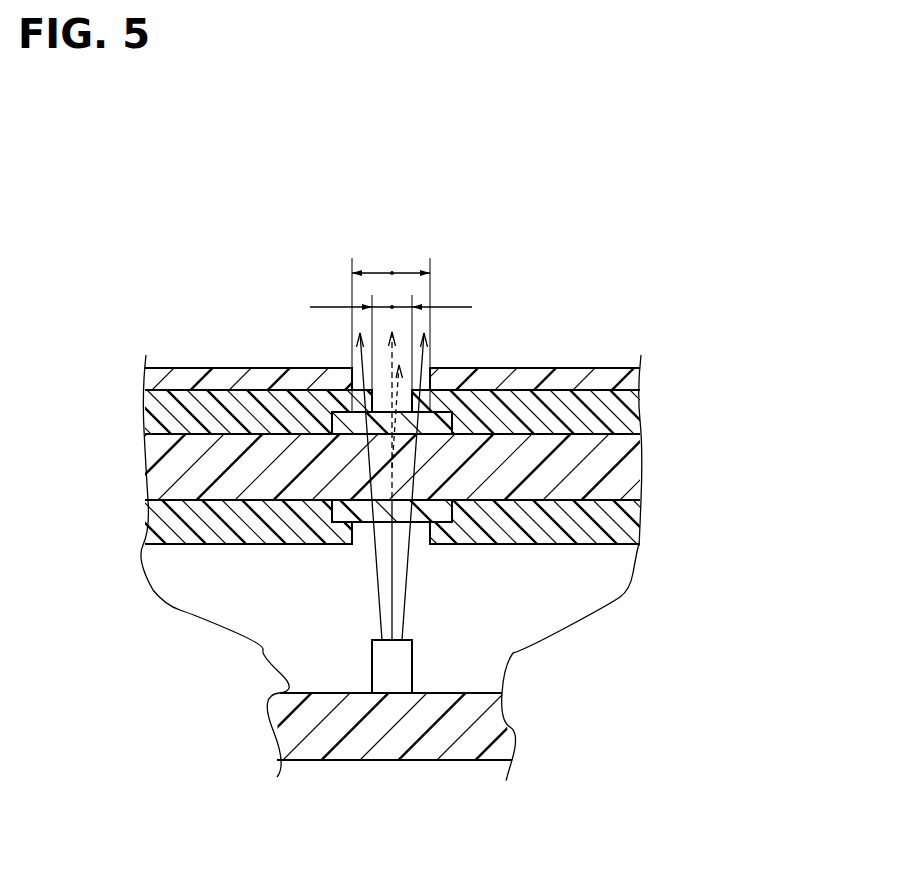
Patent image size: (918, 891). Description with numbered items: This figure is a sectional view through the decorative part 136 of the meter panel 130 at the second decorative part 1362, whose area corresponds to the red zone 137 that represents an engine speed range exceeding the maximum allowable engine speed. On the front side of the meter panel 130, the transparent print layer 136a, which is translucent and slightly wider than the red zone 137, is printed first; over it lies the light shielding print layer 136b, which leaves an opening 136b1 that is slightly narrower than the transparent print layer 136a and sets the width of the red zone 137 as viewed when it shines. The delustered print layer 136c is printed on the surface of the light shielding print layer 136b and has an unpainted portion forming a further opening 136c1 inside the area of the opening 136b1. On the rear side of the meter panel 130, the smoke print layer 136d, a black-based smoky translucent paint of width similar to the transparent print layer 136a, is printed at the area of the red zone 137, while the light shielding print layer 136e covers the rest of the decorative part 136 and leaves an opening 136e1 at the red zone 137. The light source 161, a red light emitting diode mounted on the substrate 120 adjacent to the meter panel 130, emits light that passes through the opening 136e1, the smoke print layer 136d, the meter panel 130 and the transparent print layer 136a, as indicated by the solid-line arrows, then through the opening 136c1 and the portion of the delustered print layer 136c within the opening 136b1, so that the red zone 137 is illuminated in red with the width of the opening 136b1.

The red zone 137 is at (392, 273).
The decorative part 136 is at (396, 460).
The second decorative part 1362 is at (392, 307).
The delustered print layer 136c is at (607, 373).
The light shielding print layer 136b is at (617, 405).
The transparent print layer 136a is at (435, 427).
The meter panel 130 is at (620, 473).
The smoke print layer 136d is at (438, 512).
The light shielding print layer 136e is at (617, 537).
The opening 136b1 is at (356, 392).
The opening 136c1 is at (411, 393).
The opening 136e1 is at (356, 545).
The light source 161 is at (412, 665).
The substrate 120 is at (485, 733).